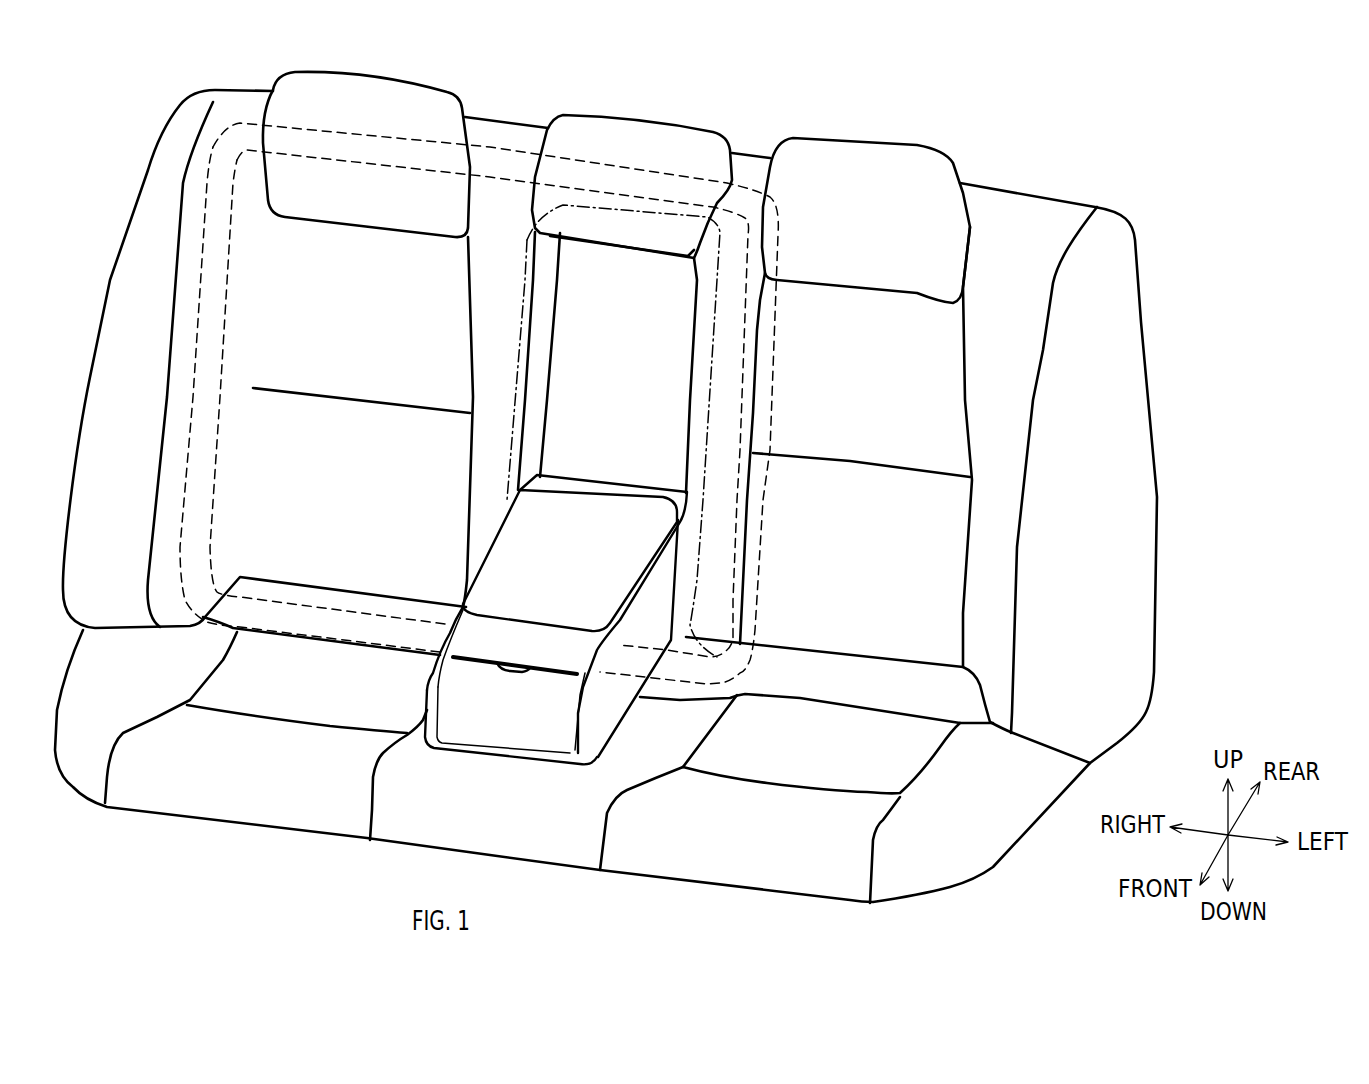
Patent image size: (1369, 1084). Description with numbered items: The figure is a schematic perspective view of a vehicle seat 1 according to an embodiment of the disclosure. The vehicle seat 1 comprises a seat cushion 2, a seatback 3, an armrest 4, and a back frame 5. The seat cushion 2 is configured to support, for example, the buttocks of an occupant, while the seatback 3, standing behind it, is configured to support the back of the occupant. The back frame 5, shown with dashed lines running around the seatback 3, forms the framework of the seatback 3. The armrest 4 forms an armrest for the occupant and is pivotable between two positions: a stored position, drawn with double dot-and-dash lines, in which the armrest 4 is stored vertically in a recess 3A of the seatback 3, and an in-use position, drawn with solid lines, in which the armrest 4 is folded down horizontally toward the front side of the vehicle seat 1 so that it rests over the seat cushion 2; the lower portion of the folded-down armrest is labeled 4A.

The vehicle seat 1 is at (1030, 145).
The seat cushion 2 is at (240, 797).
The seatback 3 is at (1053, 218).
The recess 3A is at (643, 303).
The armrest 4 is at (520, 293).
The armrest base portion 4A is at (592, 747).
The back frame 5 is at (740, 197).